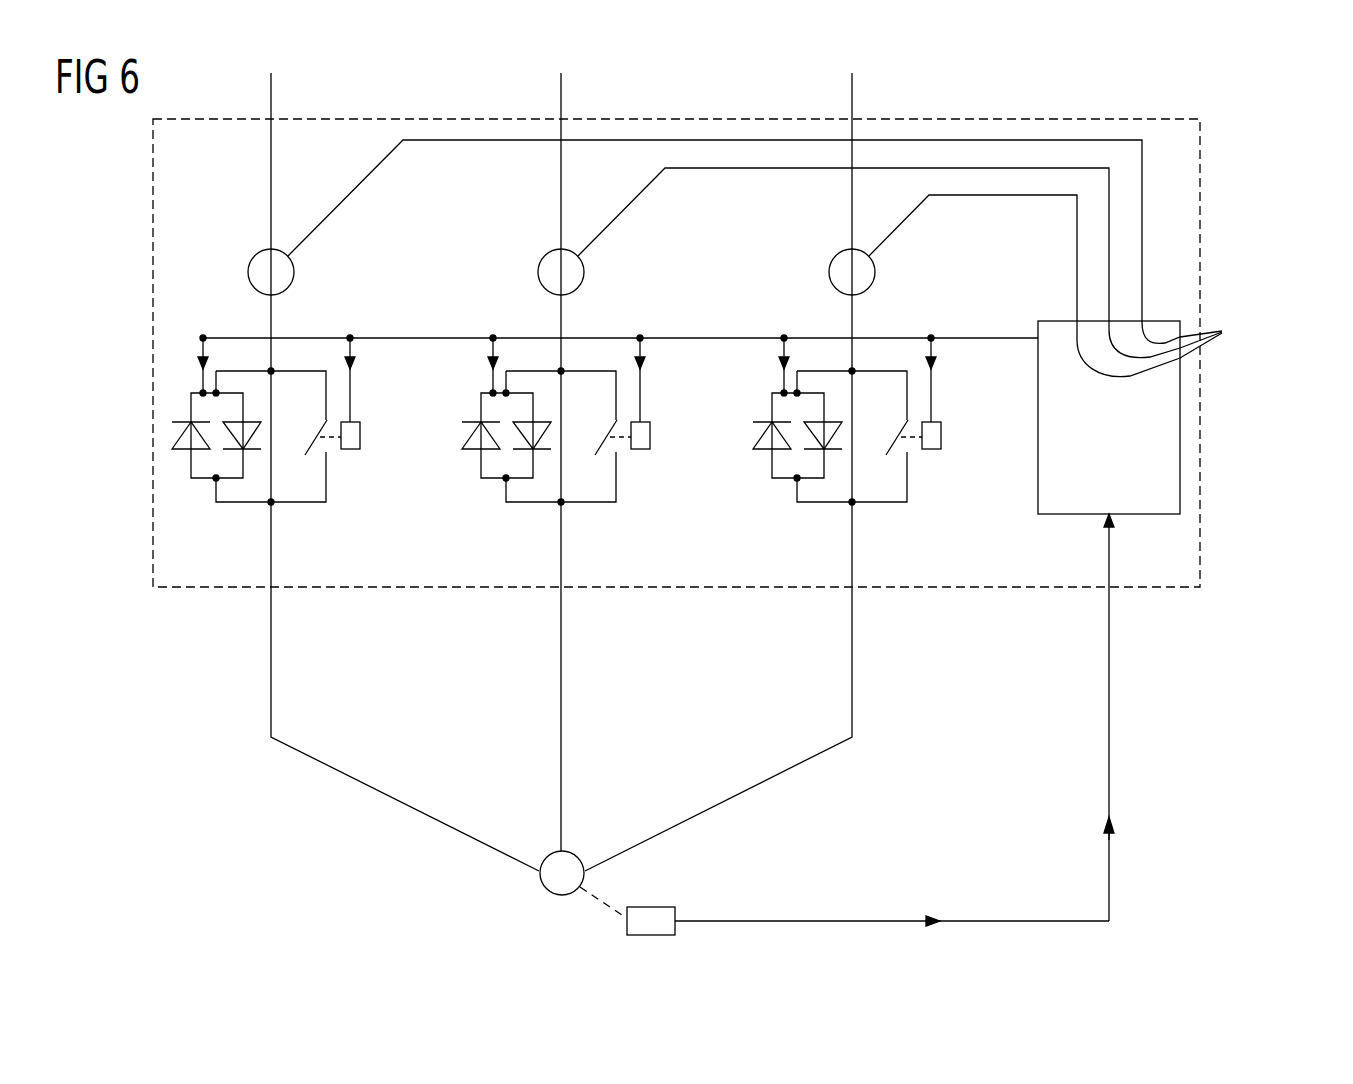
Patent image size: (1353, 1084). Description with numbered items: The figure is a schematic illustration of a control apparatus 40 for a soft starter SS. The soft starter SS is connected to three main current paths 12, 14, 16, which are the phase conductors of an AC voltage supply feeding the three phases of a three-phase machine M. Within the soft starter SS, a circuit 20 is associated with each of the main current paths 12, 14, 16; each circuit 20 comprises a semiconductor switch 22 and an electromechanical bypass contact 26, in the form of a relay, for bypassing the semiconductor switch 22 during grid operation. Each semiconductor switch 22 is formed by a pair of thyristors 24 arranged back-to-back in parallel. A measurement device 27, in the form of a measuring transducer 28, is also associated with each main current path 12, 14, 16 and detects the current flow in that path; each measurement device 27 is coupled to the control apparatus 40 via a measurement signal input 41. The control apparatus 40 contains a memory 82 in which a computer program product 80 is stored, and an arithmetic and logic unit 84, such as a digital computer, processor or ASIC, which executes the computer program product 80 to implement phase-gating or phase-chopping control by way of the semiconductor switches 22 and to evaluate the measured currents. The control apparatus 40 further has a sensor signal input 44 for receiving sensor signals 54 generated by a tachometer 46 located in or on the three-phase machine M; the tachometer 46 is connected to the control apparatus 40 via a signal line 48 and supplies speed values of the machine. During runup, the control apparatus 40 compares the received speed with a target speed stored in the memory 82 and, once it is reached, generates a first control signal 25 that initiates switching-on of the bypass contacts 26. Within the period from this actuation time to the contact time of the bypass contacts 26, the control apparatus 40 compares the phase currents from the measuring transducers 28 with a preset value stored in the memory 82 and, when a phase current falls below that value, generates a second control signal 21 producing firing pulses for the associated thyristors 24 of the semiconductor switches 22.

The soft starter SS is at (475, 119).
The main current path 12 is at (272, 88).
The main current path 14 is at (562, 88).
The main current path 16 is at (853, 88).
The circuit 20 is at (238, 371).
The second control signal 21 is at (200, 366).
The semiconductor switch 22 is at (187, 407).
The thyristor 24 is at (172, 437).
The first control signal 25 is at (353, 392).
The electromechanical bypass contact 26 is at (318, 442).
The measurement device 27 is at (529, 235).
The measuring transducer 28 is at (248, 270).
The control apparatus 40 is at (1193, 417).
The measurement signal input 41 is at (773, 258).
The sensor signal input 44 is at (1106, 516).
The tachometer 46 is at (655, 907).
The signal line 48 is at (1108, 796).
The sensor signal 54 is at (863, 921).
The computer program product 80 is at (1193, 417).
The memory 82 is at (1109, 417).
The arithmetic and logic unit 84 is at (1152, 464).
The three-phase machine M is at (562, 895).